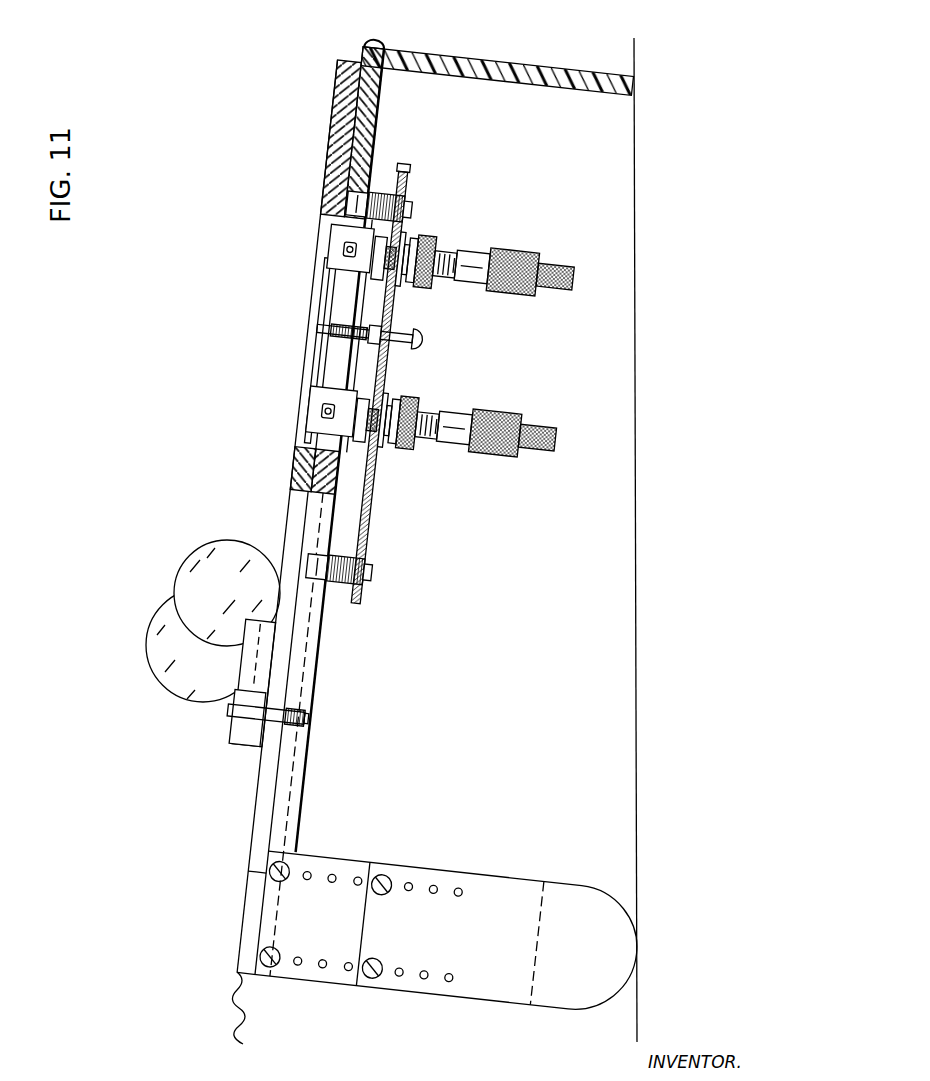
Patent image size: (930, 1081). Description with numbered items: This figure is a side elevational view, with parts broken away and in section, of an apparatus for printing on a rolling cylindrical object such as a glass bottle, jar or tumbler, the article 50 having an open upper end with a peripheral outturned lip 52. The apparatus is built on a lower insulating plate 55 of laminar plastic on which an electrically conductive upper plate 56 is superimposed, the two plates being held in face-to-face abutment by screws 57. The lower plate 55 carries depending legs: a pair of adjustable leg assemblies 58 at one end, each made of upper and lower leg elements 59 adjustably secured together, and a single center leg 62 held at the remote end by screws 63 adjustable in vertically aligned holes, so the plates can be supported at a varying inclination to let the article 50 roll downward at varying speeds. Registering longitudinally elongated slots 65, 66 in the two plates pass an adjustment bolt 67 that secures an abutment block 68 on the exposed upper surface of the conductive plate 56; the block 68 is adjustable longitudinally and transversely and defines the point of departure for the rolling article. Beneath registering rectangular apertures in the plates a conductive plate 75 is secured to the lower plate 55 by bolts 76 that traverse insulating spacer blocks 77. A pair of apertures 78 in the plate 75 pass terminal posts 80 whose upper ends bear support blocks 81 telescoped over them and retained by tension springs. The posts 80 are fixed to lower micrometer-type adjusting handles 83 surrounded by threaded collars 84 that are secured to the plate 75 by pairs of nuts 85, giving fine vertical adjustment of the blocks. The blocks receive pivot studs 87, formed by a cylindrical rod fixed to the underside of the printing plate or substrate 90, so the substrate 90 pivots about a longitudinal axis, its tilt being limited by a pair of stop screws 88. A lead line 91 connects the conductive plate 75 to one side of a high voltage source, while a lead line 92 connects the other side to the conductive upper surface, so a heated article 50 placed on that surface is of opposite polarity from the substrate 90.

The article 50 is at (153, 594).
The peripheral outturned lip 52 is at (150, 652).
The lower insulating plate 55 is at (358, 100).
The upper plate 56 is at (335, 152).
The screws 57 is at (180, 590).
The adjustable leg assemblies 58 is at (357, 996).
The leg elements 59 is at (503, 890).
The center leg 62 is at (555, 84).
The screws 63 is at (366, 44).
The slot 65 is at (292, 530).
The slot 66 is at (311, 517).
The adjustment bolt 67 is at (230, 708).
The abutment block 68 is at (245, 752).
The conductive plate 75 is at (372, 507).
The bolts 76 is at (411, 203).
The insulating spacer blocks 77 is at (388, 188).
The apertures 78 is at (379, 438).
The terminal posts 80 is at (379, 277).
The support blocks 81 is at (345, 238).
The micrometer-type adjusting handles 83 is at (484, 302).
The threaded collars 84 is at (413, 240).
The nuts 85 is at (397, 288).
The pivot studs 87 is at (330, 255).
The stop screws 88 is at (343, 336).
The printing plate or substrate 90 is at (304, 328).
The lead line 91 is at (404, 168).
The lead line 92 is at (236, 1000).